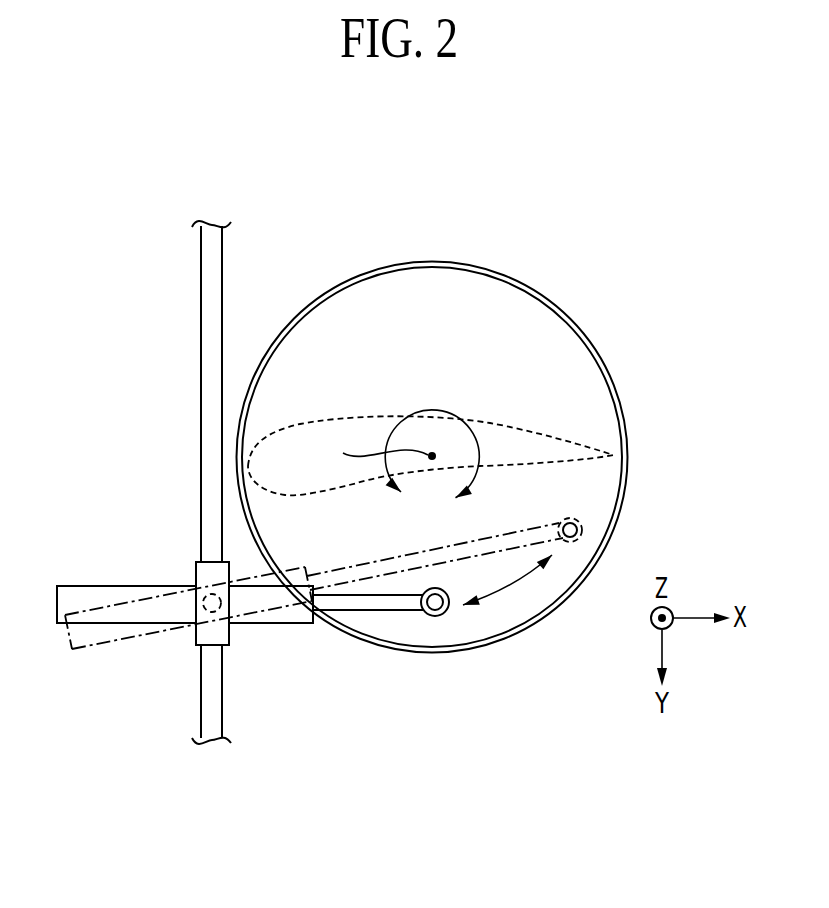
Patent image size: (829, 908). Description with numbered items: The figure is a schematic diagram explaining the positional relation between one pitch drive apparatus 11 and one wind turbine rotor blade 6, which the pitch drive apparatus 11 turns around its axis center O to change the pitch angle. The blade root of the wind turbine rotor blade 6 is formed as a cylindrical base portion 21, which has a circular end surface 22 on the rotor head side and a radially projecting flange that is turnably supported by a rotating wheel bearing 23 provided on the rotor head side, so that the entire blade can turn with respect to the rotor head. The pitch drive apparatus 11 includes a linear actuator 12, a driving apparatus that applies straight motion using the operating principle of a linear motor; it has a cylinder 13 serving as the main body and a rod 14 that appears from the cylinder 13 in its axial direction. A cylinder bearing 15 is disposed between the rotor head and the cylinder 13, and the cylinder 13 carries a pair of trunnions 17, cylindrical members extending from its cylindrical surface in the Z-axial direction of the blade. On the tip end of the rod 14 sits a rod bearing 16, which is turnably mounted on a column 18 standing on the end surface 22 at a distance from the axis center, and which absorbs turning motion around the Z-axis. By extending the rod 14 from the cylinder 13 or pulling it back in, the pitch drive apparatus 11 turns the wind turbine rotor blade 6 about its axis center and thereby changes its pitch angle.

The wind turbine rotor blade 6 is at (567, 442).
The pitch drive apparatus 11 is at (248, 685).
The linear actuator 12 is at (300, 577).
The cylinder 13 is at (82, 585).
The rod 14 is at (387, 612).
The cylinder bearing 15 is at (195, 635).
The rod bearing 16 is at (436, 612).
The trunnion 17 is at (212, 594).
The column 18 is at (443, 614).
The base portion 21 is at (432, 426).
The end surface 22 is at (402, 454).
The rotating wheel bearing 23 is at (588, 342).